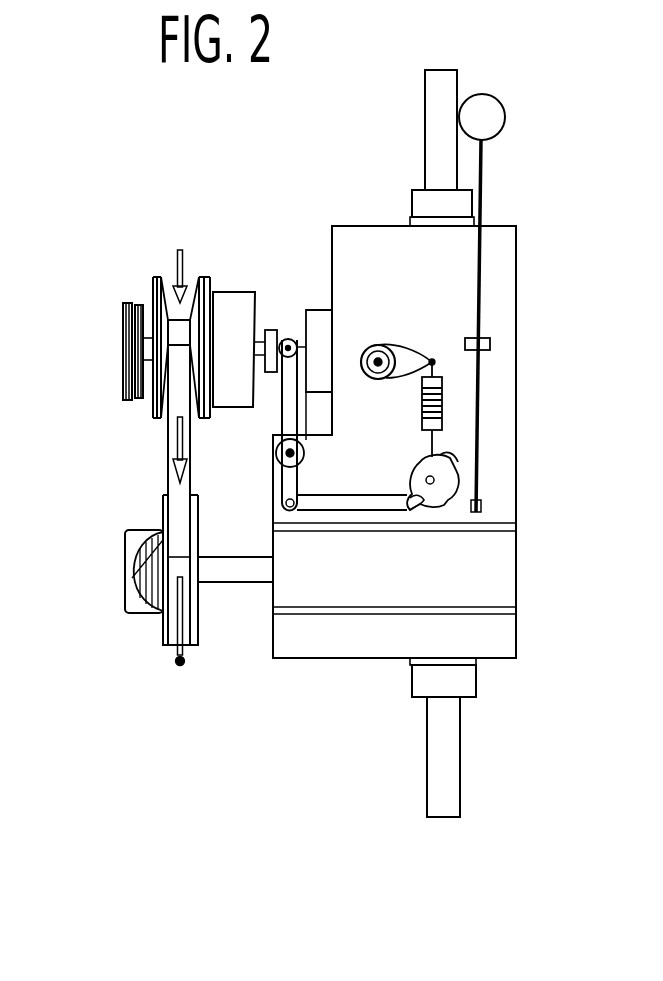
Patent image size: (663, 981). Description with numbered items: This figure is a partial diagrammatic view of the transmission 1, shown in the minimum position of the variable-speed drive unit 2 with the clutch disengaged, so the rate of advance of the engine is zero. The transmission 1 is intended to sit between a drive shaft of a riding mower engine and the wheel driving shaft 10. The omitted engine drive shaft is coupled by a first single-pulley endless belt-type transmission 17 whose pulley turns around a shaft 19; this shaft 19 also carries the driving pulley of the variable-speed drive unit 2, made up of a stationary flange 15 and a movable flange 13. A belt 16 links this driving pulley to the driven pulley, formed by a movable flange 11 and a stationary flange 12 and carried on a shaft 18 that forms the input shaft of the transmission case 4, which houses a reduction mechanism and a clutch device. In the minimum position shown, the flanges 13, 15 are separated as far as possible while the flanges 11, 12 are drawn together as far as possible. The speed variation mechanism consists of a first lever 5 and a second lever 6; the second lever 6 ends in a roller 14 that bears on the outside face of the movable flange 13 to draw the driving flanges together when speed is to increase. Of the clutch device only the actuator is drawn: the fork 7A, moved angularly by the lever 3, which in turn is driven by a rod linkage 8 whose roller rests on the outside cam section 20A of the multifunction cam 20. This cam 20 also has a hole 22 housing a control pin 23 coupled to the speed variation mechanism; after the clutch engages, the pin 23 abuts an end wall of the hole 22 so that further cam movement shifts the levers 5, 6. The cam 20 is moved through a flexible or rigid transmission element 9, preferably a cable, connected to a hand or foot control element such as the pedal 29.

The transmission 1 is at (567, 205).
The variable-speed drive unit 2 is at (140, 468).
The lever 3 is at (436, 364).
The transmission case 4 is at (522, 278).
The first lever 5 is at (360, 510).
The second lever 6 is at (303, 380).
The fork 7A is at (472, 338).
The rod linkage 8 is at (445, 435).
The transmission element 9 is at (485, 178).
The wheel driving shaft 10 is at (441, 68).
The movable flange 11 is at (167, 642).
The stationary flange 12 is at (198, 646).
The movable flange 13 is at (205, 277).
The roller 14 is at (288, 340).
The stationary flange 15 is at (158, 277).
The belt 16 is at (174, 646).
The single-pulley endless belt-type transmission 17 is at (131, 305).
The shaft 18 is at (233, 584).
The shaft 19 is at (124, 348).
The multifunction cam 20 is at (458, 484).
The outside cam section 20A is at (455, 456).
The hole 22 is at (418, 507).
The control pin 23 is at (420, 500).
The pedal 29 is at (482, 117).